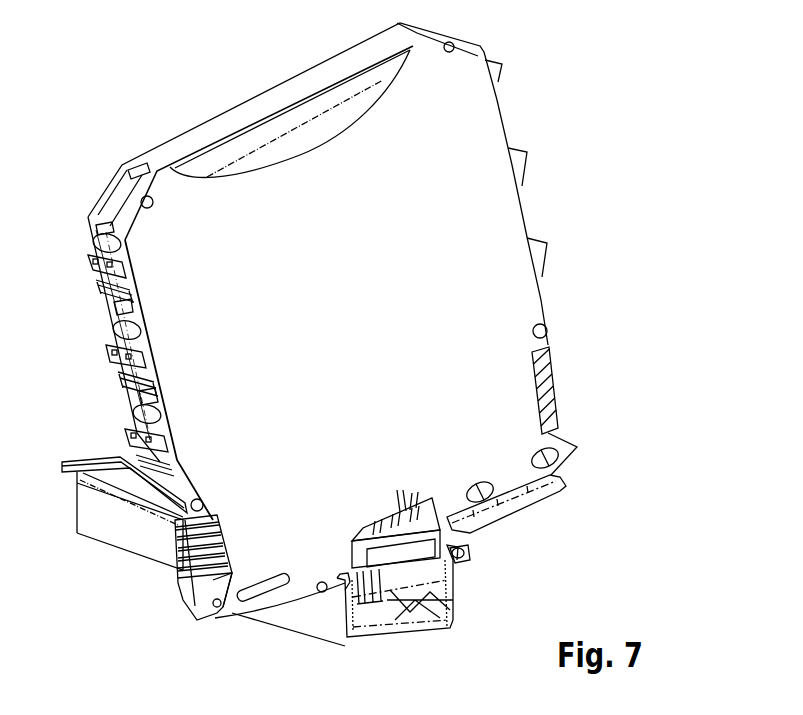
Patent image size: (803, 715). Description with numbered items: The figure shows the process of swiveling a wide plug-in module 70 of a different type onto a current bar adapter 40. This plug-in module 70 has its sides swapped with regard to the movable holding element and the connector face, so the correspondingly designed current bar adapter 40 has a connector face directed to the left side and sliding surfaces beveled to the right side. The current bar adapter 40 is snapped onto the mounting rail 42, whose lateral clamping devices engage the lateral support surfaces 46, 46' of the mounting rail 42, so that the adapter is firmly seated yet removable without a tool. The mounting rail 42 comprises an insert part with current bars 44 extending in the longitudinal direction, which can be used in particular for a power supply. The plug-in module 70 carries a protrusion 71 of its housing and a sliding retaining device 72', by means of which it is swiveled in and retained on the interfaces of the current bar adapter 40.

The plug-in module 70 is at (492, 212).
The current bar adapter 40 is at (397, 555).
The current bars 44 is at (423, 560).
The protrusion of the second plug-in module 71 is at (340, 580).
The mounting rail 42 is at (163, 543).
The lateral support surface of the mounting rail 46 is at (103, 525).
The lateral support surface of the mounting rail 46' is at (499, 583).
The sliding retaining device of the second plug-in module 72' is at (523, 512).